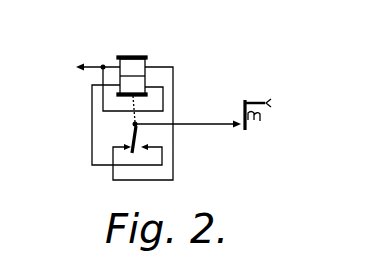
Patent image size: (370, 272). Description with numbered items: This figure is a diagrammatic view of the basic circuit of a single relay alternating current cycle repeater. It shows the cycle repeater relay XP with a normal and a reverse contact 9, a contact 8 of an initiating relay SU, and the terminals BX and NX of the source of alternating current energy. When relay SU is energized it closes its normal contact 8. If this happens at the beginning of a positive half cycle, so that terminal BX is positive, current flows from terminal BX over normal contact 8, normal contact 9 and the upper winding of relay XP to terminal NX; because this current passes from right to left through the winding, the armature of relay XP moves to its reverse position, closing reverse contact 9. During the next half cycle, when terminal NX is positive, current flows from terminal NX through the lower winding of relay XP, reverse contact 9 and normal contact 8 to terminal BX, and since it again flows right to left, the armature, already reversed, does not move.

The normal and reverse contact 9 is at (134, 137).
The contact 8 is at (238, 101).
The cycle repeater relay XP is at (132, 64).
The terminal NX is at (81, 66).
The initiating relay SU is at (245, 111).
The terminal BX is at (285, 103).